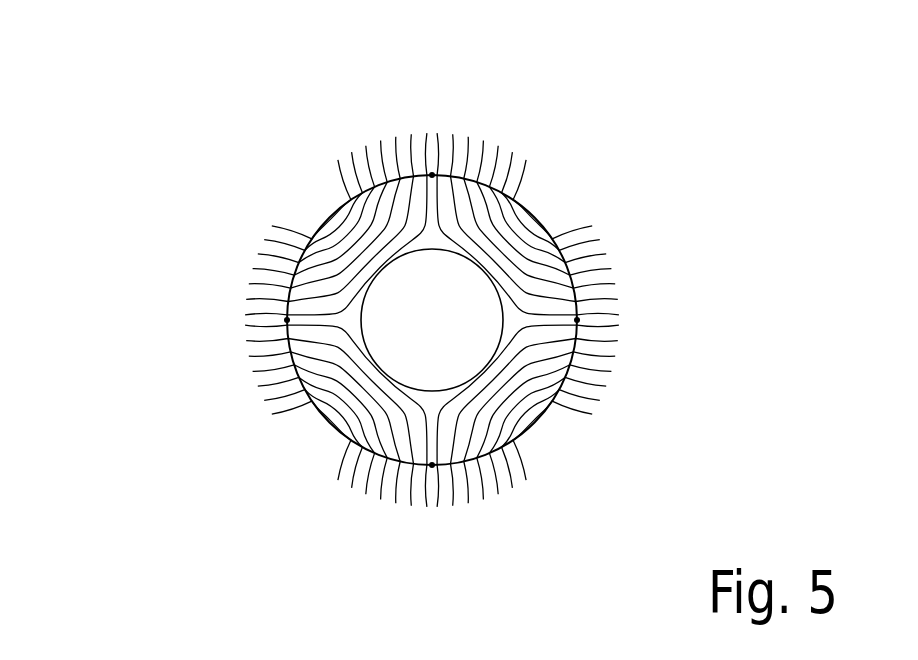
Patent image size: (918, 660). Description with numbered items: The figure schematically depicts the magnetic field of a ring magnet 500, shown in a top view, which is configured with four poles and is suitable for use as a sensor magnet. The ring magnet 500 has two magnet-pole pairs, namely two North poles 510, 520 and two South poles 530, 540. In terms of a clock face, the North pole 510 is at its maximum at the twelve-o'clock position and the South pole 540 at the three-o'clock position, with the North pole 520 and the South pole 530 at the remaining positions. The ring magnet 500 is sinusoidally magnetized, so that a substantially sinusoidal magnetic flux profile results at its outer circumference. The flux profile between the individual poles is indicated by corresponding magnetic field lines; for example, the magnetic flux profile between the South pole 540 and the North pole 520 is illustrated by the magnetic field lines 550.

The ring magnet 500 is at (436, 329).
The North pole 510 is at (424, 73).
The North pole 520 is at (447, 582).
The South pole 530 is at (163, 317).
The South pole 540 is at (698, 314).
The magnetic field lines 550 is at (620, 305).